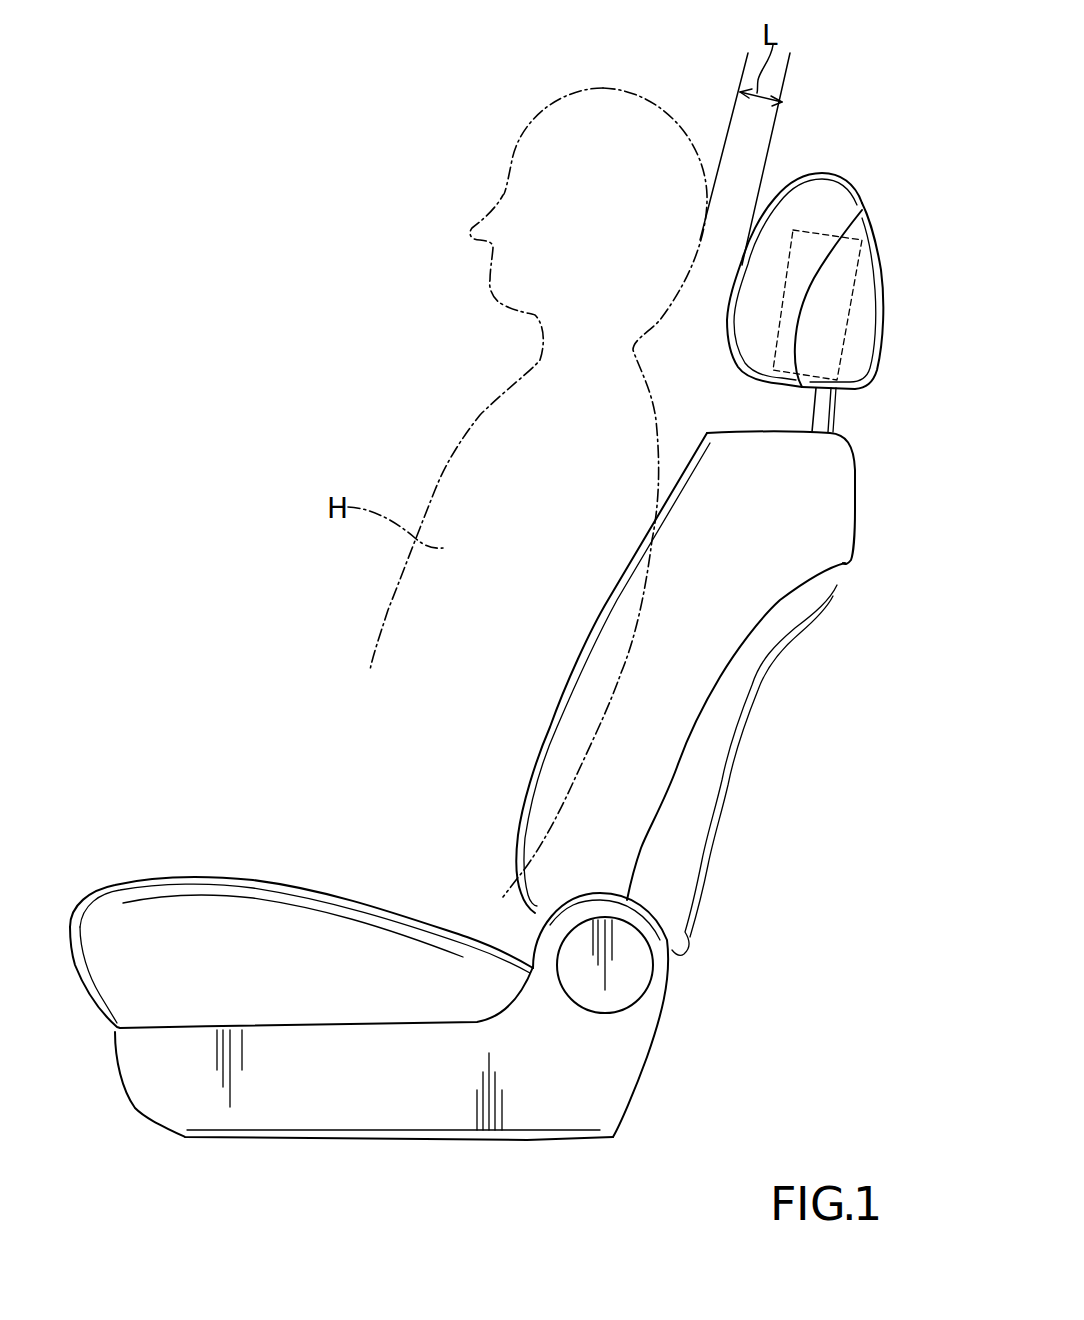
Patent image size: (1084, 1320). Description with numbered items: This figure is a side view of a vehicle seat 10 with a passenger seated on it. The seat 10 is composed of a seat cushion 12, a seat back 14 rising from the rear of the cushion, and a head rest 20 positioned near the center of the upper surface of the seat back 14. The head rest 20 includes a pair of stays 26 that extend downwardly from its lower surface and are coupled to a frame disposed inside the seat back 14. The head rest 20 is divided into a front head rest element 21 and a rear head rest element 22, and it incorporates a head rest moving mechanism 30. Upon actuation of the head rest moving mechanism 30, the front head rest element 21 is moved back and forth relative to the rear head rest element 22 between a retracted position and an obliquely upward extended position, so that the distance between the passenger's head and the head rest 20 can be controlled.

The seat 10 is at (740, 900).
The seat cushion 12 is at (260, 916).
The seat back 14 is at (602, 634).
The head rest 20 is at (867, 174).
The front head rest element 21 is at (805, 193).
The rear head rest element 22 is at (869, 274).
The stays 26 is at (828, 415).
The head rest moving mechanism 30 is at (820, 341).